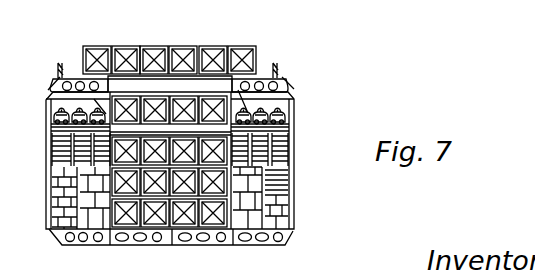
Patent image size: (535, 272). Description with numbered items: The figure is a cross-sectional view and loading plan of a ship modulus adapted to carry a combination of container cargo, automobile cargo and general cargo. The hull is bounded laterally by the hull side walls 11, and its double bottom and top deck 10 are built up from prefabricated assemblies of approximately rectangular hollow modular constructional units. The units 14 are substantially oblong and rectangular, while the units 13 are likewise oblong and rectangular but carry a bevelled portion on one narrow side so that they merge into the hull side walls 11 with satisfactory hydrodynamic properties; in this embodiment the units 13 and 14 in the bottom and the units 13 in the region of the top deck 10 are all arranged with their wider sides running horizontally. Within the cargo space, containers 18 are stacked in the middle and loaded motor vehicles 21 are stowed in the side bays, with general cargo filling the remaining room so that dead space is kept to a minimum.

The top deck 10 is at (275, 62).
The hull side walls 11 is at (293, 175).
The hollow modular construction unit 13 is at (288, 88).
The hollow modular construction unit 14 is at (215, 241).
The container 18 is at (127, 50).
The motor vehicle 21 is at (287, 115).